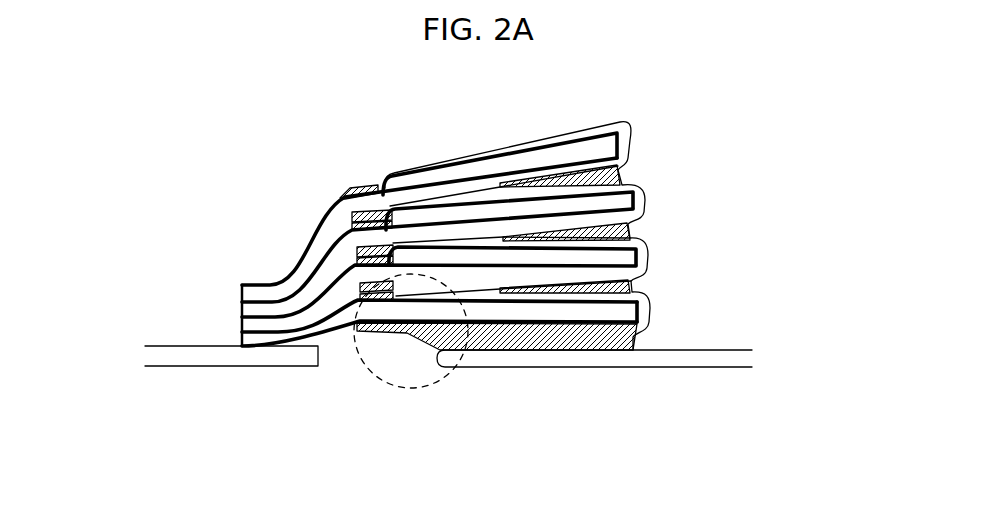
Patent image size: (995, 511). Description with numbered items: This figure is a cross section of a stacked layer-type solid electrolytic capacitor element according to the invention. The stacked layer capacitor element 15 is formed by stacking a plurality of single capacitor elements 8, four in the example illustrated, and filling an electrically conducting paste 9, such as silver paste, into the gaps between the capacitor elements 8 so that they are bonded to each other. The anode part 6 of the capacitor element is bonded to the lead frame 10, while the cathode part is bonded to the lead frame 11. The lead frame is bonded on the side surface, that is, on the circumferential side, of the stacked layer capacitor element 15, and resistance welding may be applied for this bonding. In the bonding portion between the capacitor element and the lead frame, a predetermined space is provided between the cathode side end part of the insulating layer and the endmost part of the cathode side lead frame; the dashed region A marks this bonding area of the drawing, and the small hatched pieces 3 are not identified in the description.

The semiconductor chip 3 is at (356, 188).
The anode part 6 is at (253, 230).
The single capacitor element 8 is at (625, 130).
The electrically conducting paste 9 is at (628, 224).
The lead frame 10 is at (162, 358).
The lead frame 11 is at (693, 358).
The stacked layer capacitor element 15 is at (755, 180).
The region A is at (445, 387).